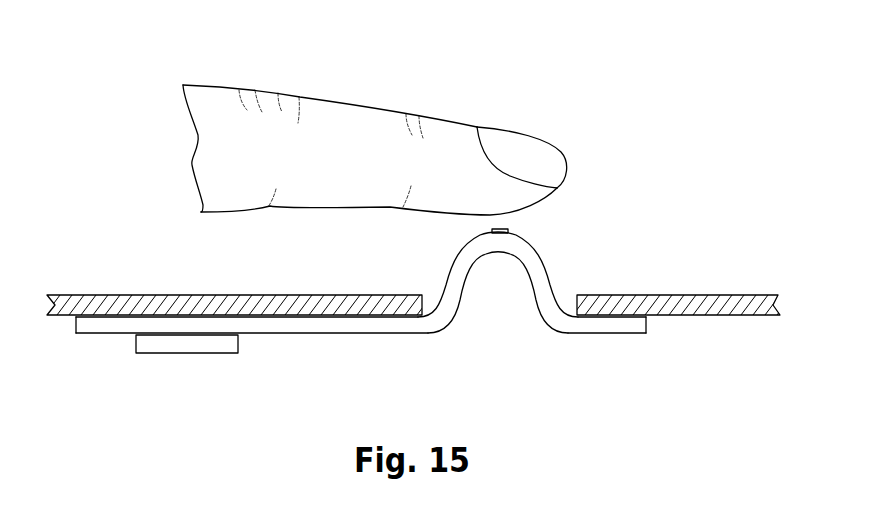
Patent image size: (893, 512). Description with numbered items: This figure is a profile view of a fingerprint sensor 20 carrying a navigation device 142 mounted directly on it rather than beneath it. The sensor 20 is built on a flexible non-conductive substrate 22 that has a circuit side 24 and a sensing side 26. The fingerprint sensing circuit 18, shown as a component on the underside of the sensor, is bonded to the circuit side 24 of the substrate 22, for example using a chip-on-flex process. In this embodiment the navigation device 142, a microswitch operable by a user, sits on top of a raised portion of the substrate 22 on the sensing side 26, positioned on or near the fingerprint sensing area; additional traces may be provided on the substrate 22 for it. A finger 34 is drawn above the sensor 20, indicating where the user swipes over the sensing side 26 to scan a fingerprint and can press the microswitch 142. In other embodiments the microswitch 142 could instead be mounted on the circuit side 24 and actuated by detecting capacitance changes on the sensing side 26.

The fingerprint sensing circuit 18 is at (157, 343).
The fingerprint sensor 20 is at (279, 378).
The flexible non-conductive substrate 22 is at (375, 334).
The circuit side 24 is at (470, 262).
The sensing side 26 is at (458, 251).
The finger 34 is at (358, 124).
The navigation device 142 is at (508, 232).